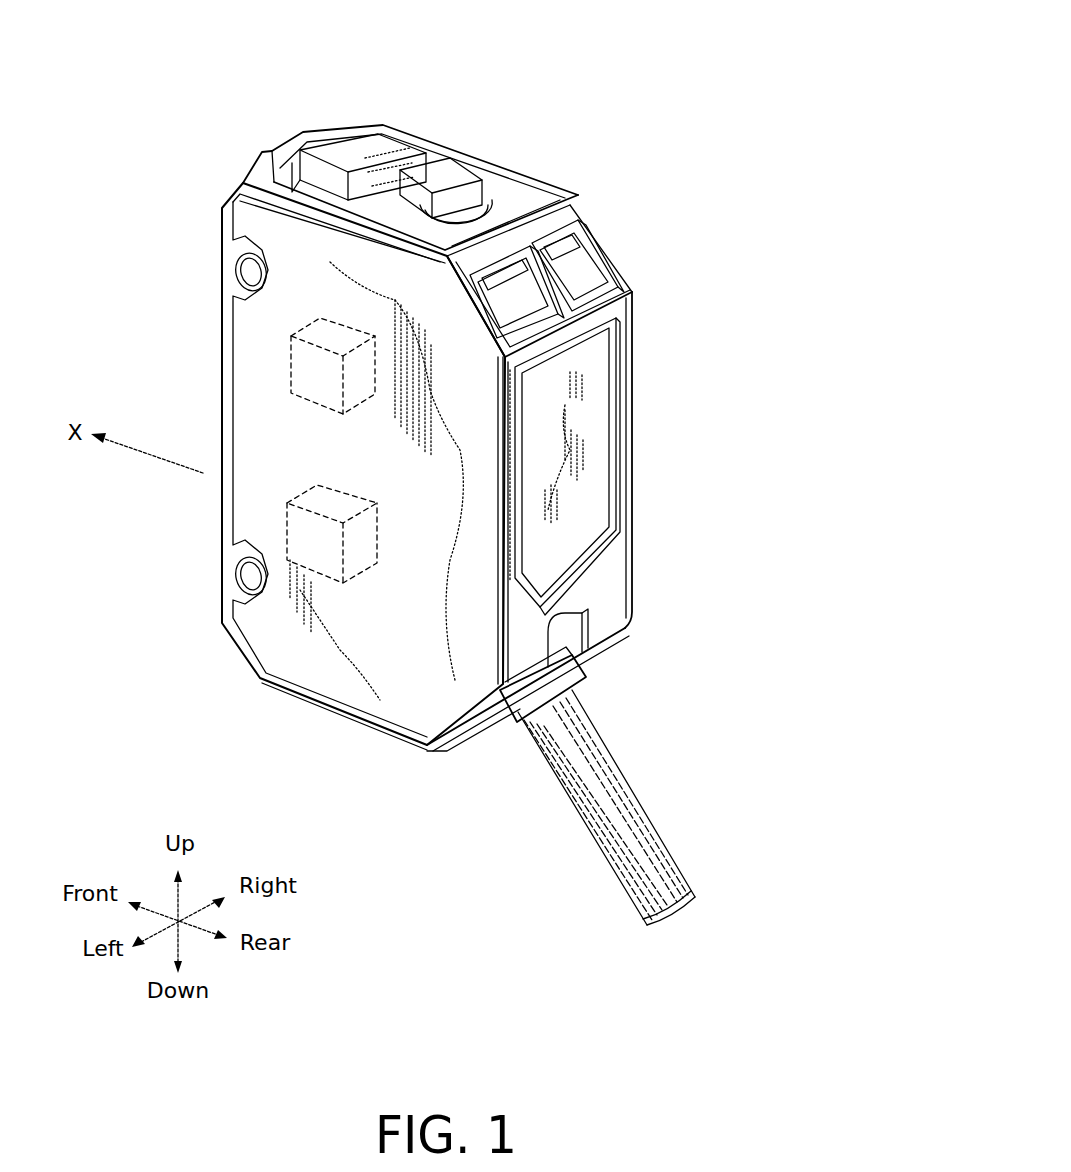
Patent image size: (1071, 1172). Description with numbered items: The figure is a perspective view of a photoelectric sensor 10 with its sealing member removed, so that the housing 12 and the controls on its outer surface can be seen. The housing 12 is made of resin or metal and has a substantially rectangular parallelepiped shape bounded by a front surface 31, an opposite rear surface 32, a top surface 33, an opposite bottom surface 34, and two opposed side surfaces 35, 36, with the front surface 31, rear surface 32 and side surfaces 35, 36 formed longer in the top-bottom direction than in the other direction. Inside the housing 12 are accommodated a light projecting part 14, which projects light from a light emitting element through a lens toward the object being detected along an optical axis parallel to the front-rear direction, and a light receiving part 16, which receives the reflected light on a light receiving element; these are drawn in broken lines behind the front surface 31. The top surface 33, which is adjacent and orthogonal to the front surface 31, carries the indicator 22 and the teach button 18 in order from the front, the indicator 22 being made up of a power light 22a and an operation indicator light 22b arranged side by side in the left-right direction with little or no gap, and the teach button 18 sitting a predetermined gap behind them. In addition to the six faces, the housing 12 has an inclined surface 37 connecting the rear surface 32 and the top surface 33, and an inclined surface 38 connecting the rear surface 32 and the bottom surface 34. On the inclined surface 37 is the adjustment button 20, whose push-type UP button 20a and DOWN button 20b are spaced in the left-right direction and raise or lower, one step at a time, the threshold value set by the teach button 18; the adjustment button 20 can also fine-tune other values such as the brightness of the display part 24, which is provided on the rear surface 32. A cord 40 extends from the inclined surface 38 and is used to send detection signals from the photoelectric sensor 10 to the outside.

The photoelectric sensor 10 is at (703, 69).
The housing 12 is at (537, 172).
The light projecting part 14 is at (312, 577).
The light receiving part 16 is at (292, 352).
The teach button 18 is at (458, 205).
The adjustment button 20 is at (770, 170).
The UP button 20a is at (592, 268).
The DOWN button 20b is at (600, 246).
The indicator 22 is at (396, 45).
The power light 22a is at (340, 130).
The operation indicator light 22b is at (390, 125).
The display part 24 is at (575, 447).
The front surface 31 is at (225, 300).
The rear surface 32 is at (632, 600).
The top surface 33 is at (428, 165).
The bottom surface 34 is at (358, 718).
The side surface 35 is at (472, 700).
The side surface 36 is at (634, 496).
The inclined surface 37 is at (632, 292).
The inclined surface 38 is at (592, 662).
The cord 40 is at (648, 808).